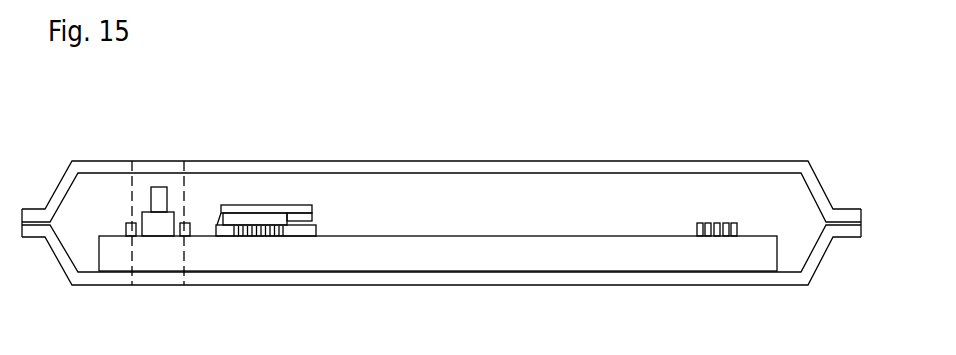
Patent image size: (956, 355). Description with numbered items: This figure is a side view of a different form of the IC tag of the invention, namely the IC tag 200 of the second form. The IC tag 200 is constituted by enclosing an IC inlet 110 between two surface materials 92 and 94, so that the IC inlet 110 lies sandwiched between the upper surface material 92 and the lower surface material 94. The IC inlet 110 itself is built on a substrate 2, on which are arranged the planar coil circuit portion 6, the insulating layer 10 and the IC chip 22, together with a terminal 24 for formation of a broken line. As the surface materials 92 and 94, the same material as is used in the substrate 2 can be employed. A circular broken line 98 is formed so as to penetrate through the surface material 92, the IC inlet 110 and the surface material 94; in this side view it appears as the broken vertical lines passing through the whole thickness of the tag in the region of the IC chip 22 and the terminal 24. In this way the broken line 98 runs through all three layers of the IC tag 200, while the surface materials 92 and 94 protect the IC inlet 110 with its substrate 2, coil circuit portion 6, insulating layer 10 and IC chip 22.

The IC tag 200 is at (480, 137).
The IC inlet 110 is at (381, 208).
The surface material 92 is at (688, 167).
The surface material 94 is at (733, 280).
The substrate 2 is at (645, 257).
The broken line 98 is at (186, 247).
The IC chip 22 is at (160, 190).
The terminal for formation of broken line 24 is at (126, 229).
The insulating layer 10 is at (248, 220).
The planar coil circuit portion 6 is at (716, 225).